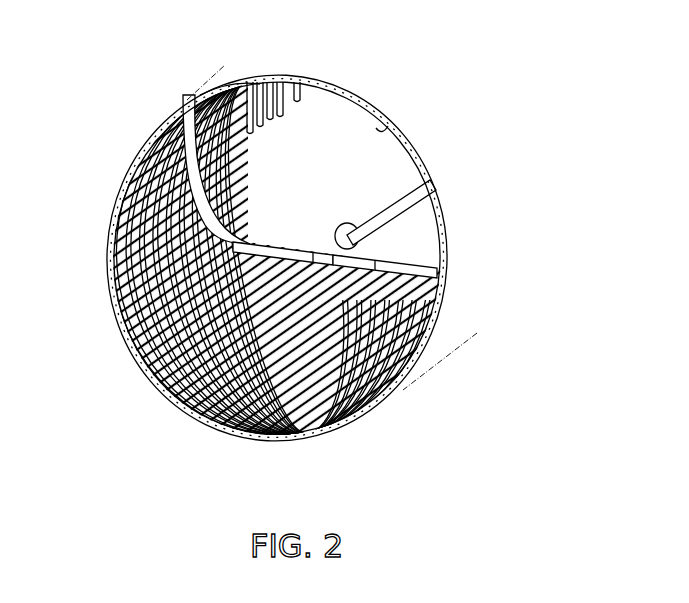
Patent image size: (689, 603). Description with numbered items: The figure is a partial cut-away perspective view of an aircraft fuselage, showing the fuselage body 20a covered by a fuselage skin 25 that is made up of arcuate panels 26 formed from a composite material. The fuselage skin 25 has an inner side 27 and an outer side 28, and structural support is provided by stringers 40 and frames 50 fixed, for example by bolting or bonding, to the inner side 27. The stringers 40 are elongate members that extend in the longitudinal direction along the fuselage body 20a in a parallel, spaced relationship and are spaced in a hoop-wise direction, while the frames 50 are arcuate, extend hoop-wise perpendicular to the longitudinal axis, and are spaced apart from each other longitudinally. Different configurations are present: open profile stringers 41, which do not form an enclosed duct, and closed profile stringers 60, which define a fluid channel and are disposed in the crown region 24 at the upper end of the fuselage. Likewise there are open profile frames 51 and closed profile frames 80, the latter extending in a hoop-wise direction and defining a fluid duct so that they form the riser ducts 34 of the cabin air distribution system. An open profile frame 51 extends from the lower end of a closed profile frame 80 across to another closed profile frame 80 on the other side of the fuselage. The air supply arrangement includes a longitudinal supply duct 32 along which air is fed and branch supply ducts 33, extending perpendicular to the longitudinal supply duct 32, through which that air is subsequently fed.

The fuselage body 20a is at (452, 338).
The crown region 24 is at (305, 127).
The fuselage skin 25 is at (458, 252).
The panels 26 is at (440, 197).
The inner side 27 is at (388, 126).
The outer side 28 is at (418, 130).
The longitudinal supply duct 32 is at (385, 208).
The branch supply ducts 33 is at (300, 252).
The riser ducts 34 is at (243, 107).
The stringers 40 is at (112, 260).
The open profile stringers 41 is at (113, 202).
The frames 50 is at (113, 295).
The open profile frames 51 is at (313, 327).
The closed profile stringers 60 is at (228, 80).
The closed profile frames 80 is at (190, 140).